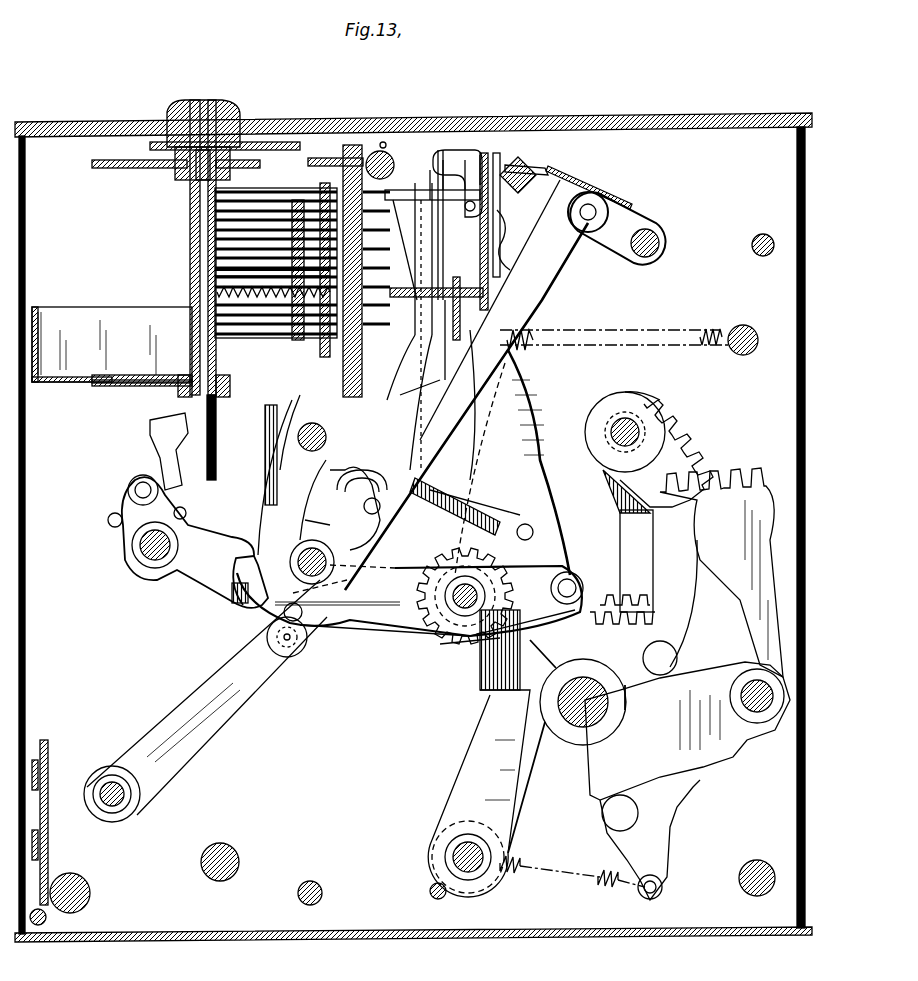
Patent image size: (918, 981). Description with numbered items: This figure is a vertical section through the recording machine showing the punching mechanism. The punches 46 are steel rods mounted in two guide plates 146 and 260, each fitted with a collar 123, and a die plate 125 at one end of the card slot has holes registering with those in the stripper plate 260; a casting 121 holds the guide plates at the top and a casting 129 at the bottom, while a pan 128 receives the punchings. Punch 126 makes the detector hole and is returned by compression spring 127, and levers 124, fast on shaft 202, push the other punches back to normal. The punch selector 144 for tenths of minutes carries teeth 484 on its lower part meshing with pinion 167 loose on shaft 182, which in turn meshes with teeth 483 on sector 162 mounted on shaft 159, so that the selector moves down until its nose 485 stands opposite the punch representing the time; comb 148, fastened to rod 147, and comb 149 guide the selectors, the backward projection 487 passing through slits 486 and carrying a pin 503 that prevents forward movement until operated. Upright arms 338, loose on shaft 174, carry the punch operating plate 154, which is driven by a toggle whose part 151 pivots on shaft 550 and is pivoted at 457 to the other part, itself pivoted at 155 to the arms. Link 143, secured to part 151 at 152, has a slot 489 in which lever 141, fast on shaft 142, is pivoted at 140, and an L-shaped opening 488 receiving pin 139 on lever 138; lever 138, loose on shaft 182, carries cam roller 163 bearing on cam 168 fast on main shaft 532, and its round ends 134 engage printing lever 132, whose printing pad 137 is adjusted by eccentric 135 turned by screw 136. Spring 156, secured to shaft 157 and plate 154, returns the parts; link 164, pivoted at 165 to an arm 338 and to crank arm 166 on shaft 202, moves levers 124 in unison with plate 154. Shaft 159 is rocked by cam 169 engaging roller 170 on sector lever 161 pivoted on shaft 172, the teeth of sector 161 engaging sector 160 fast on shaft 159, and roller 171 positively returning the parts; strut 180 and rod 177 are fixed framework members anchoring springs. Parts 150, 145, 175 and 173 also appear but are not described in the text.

The casting 121 is at (128, 168).
The guide or stripper plate 260 is at (195, 175).
The punches 46 is at (225, 235).
The collar 123 is at (300, 205).
The nose of punch selector 485 is at (392, 168).
The rod 147 is at (385, 145).
The comb 148 is at (430, 170).
The slits 486 is at (443, 160).
The comb 149 is at (465, 160).
The backward projection 487 is at (480, 155).
The pin 503 is at (522, 165).
The plate 150 is at (548, 170).
The pivot 457 is at (612, 196).
The toggle part 151 is at (640, 205).
The shaft 550 is at (660, 243).
The pivot 152 is at (590, 232).
The punch operating plate 154 is at (488, 218).
The pivot 155 is at (525, 283).
The spring 156 is at (640, 332).
The stationary shaft 157 is at (743, 325).
The compression spring 127 is at (390, 292).
The levers 124 is at (215, 262).
The die plate 125 is at (217, 292).
The pan 128 is at (38, 318).
The casting 129 is at (125, 385).
The punch 126 is at (343, 340).
The rod 145 is at (415, 330).
The guide plate 146 is at (437, 370).
The punch selector 144 is at (400, 395).
The link 143 is at (482, 372).
The teeth 484 is at (487, 469).
The sector 160 is at (670, 412).
The shaft 159 is at (610, 430).
The sector lever 161 is at (720, 486).
The printing pad 137 is at (160, 428).
The operating pin 139 is at (355, 488).
The link 164 is at (455, 500).
The eccentric 135 is at (135, 483).
The crank arm 166 is at (360, 505).
The pivot 165 is at (535, 528).
The screw 136 is at (110, 515).
The L-shaped opening 488 is at (310, 525).
The cam roller 163 is at (570, 578).
The shaft 182 is at (450, 596).
The sector 162 is at (652, 590).
The lever 132 is at (197, 567).
The round ends 134 is at (243, 577).
The shaft 202 is at (340, 612).
The teeth 483 is at (630, 614).
The roller 171 is at (678, 658).
The slot 489 is at (289, 642).
The lever 138 is at (390, 640).
The pinion 167 is at (445, 642).
The cam 168 is at (480, 665).
The pivot 140 is at (289, 657).
The upright arms 338 is at (490, 700).
The main shaft 532 is at (575, 740).
The cam 169 is at (687, 781).
The shaft 172 is at (758, 712).
The lever 141 is at (195, 740).
The roller 170 is at (640, 813).
The shaft 142 is at (125, 802).
The stud 175 is at (227, 843).
The shaft 174 is at (455, 855).
The strut 180 is at (748, 866).
The spring rod 173 is at (575, 875).
The rod 177 is at (445, 897).